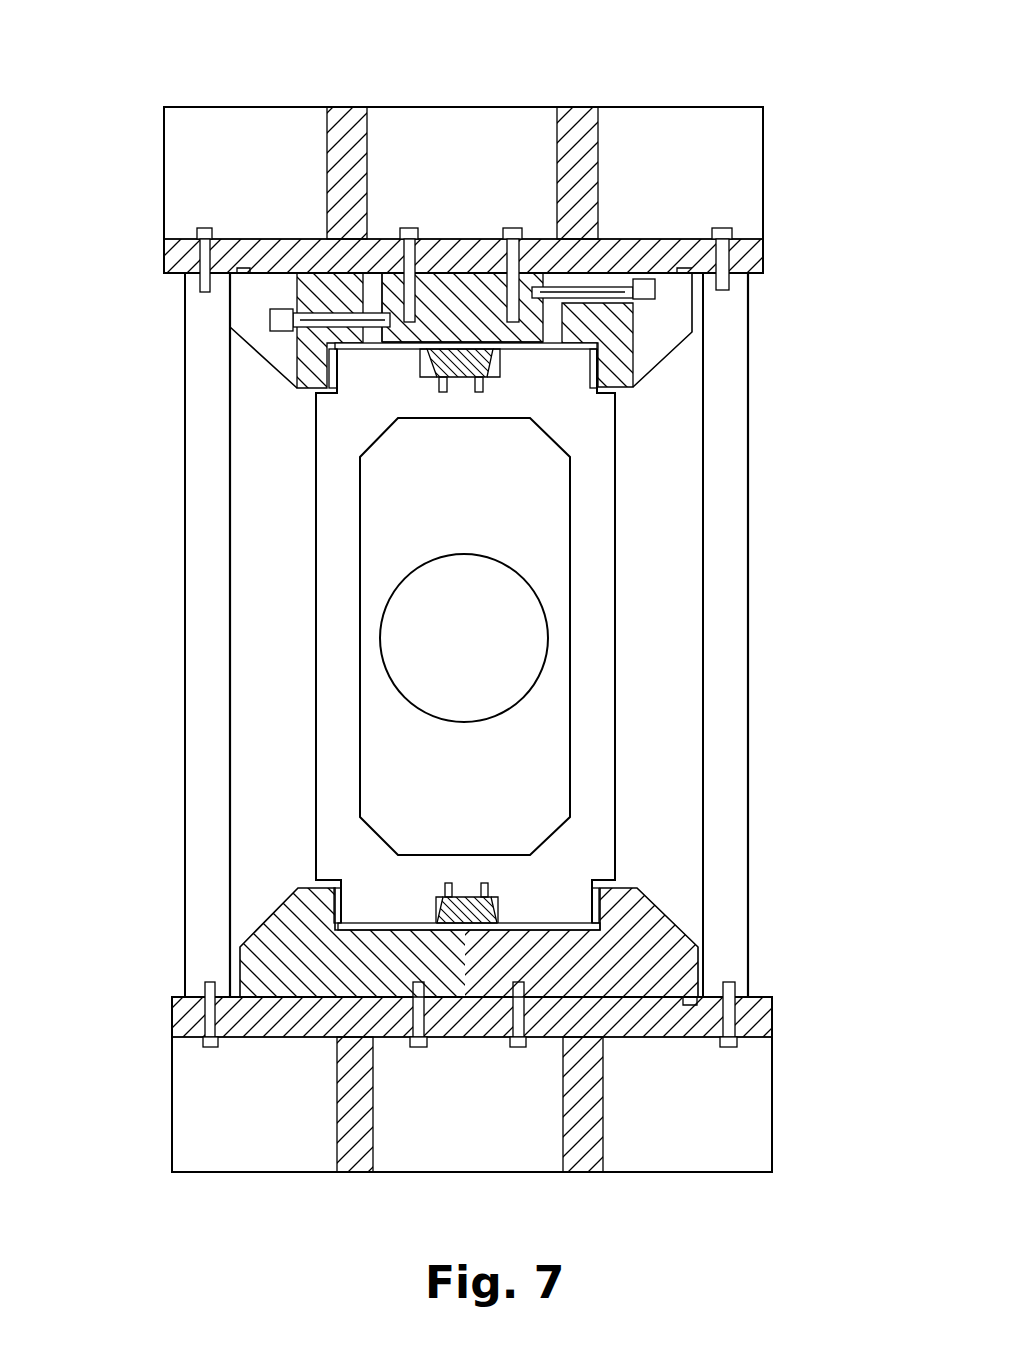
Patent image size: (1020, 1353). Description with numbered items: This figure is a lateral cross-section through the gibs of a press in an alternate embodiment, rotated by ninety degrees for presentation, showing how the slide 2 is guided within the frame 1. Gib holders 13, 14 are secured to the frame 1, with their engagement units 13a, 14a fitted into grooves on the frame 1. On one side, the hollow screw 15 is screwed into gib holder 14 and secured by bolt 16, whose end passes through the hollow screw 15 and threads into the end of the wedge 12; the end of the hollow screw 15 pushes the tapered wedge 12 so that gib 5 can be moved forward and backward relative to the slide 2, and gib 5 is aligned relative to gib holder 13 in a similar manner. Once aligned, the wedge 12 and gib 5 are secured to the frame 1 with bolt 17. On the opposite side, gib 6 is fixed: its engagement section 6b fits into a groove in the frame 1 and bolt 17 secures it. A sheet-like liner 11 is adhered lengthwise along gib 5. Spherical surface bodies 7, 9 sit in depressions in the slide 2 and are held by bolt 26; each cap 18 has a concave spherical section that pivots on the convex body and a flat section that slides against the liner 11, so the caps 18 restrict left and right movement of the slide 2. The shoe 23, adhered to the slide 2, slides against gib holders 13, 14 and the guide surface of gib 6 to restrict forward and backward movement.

The frame 1 is at (345, 118).
The slide 2 is at (590, 597).
The gib 5 is at (483, 300).
The gib 6 is at (640, 935).
The engagement section 6b is at (690, 1005).
The spherical surface body 7 is at (463, 382).
The spherical surface body 9 is at (470, 895).
The liner 11 is at (428, 350).
The wedge 12 is at (437, 283).
The gib holder 13 is at (272, 283).
The engagement unit 13a is at (237, 280).
The gib holder 14 is at (685, 295).
The engagement unit 14a is at (690, 275).
The hollow screw 15 is at (270, 316).
The bolt 16 is at (270, 330).
The bolt 17 is at (403, 228).
The cap 18 is at (497, 360).
The shoe 23 is at (328, 392).
The bolt 26 is at (438, 392).